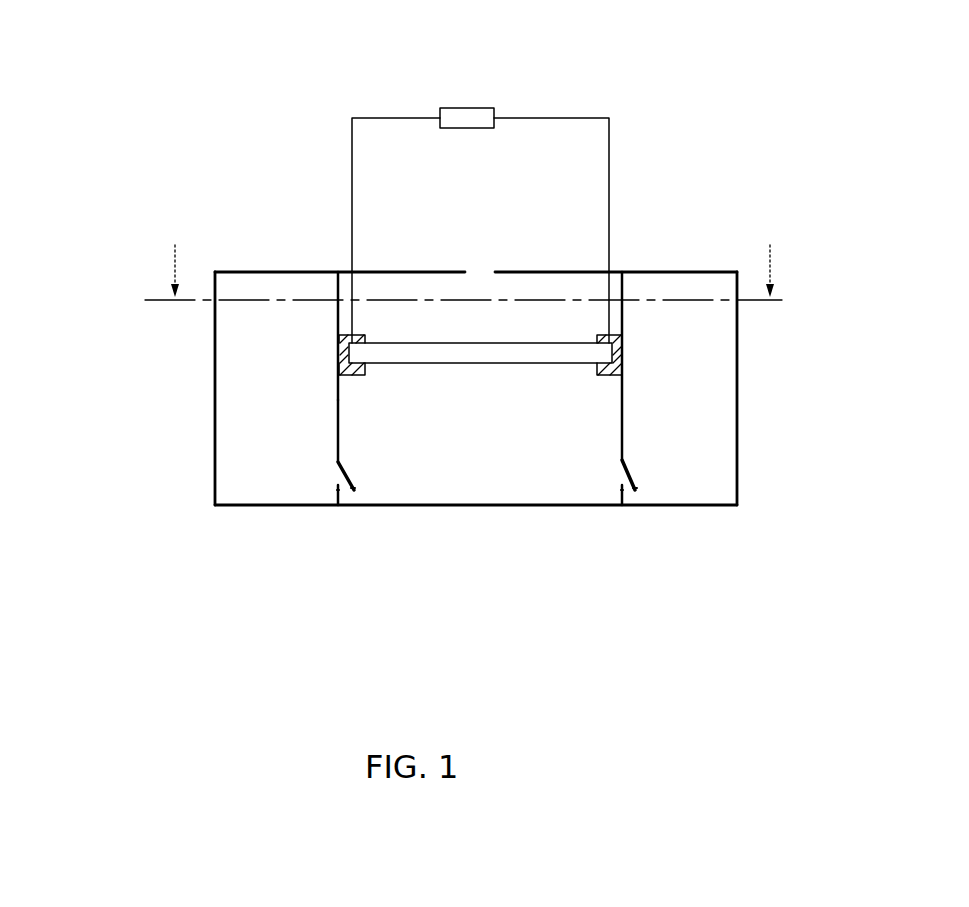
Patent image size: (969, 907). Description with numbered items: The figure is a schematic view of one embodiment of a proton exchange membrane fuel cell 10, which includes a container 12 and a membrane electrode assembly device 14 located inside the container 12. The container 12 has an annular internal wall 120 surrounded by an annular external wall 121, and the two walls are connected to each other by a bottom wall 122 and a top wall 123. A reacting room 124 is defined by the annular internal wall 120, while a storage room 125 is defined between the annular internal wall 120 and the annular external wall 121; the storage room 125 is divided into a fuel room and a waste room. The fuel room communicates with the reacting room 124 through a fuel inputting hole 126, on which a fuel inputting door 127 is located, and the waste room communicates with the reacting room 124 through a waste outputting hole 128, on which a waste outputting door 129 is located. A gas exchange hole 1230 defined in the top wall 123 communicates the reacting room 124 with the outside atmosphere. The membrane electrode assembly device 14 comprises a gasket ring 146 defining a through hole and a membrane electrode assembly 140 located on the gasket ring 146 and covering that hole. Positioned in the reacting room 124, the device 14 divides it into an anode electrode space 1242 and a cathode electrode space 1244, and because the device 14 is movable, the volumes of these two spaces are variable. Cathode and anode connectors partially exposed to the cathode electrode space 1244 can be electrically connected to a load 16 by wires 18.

The proton exchange membrane fuel cell 10 is at (455, 70).
The container 12 is at (178, 323).
The membrane electrode assembly device 14 is at (472, 382).
The load 16 is at (447, 110).
The wires 18 is at (609, 158).
The annular internal wall 120 is at (622, 428).
The annular external wall 121 is at (737, 365).
The bottom wall 122 is at (258, 505).
The top wall 123 is at (308, 272).
The gas exchange hole 1230 is at (482, 270).
The reacting room 124 is at (112, 430).
The anode electrode space 1242 is at (393, 431).
The cathode electrode space 1244 is at (382, 313).
The storage room 125 is at (242, 358).
The fuel inputting hole 126 is at (340, 477).
The fuel inputting door 127 is at (353, 483).
The waste outputting hole 128 is at (622, 475).
The waste outputting door 129 is at (637, 487).
The membrane electrode assembly 140 is at (533, 347).
The gasket ring 146 is at (622, 351).